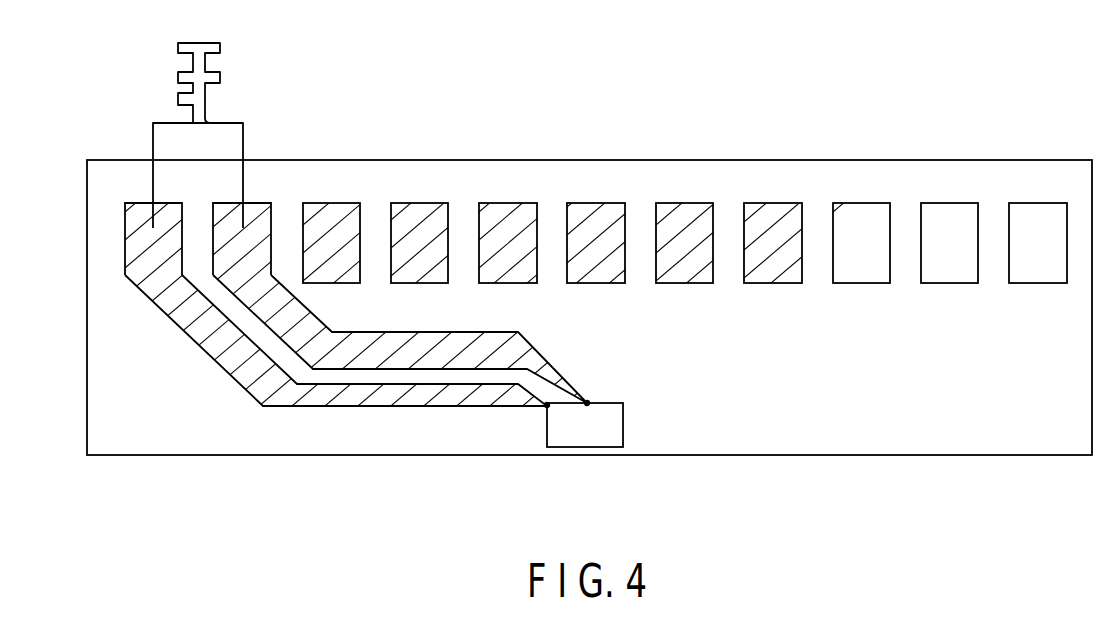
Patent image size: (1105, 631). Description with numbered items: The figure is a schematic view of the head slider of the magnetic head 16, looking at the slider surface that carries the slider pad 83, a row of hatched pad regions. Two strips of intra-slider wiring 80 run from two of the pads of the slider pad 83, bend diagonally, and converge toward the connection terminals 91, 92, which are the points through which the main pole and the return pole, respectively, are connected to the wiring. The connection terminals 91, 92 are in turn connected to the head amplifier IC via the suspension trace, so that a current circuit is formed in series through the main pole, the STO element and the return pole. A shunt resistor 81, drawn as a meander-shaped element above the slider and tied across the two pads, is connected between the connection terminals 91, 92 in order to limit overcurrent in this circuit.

The slider pad 83 is at (228, 213).
The intra-slider wiring 80 is at (340, 357).
The shunt resistor 81 is at (219, 77).
The magnetic head 16 is at (623, 423).
The connection terminal 91 is at (588, 402).
The connection terminal 92 is at (545, 407).